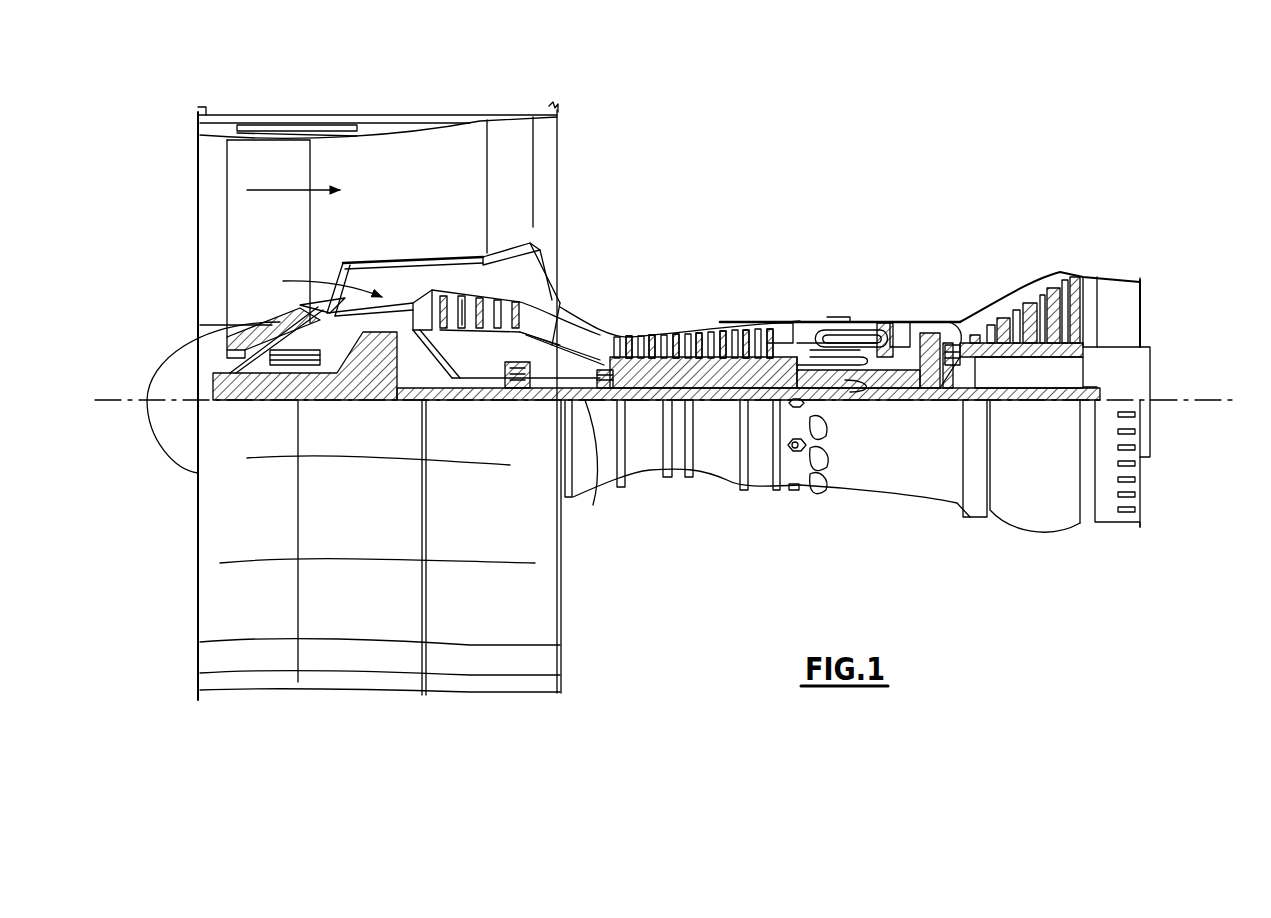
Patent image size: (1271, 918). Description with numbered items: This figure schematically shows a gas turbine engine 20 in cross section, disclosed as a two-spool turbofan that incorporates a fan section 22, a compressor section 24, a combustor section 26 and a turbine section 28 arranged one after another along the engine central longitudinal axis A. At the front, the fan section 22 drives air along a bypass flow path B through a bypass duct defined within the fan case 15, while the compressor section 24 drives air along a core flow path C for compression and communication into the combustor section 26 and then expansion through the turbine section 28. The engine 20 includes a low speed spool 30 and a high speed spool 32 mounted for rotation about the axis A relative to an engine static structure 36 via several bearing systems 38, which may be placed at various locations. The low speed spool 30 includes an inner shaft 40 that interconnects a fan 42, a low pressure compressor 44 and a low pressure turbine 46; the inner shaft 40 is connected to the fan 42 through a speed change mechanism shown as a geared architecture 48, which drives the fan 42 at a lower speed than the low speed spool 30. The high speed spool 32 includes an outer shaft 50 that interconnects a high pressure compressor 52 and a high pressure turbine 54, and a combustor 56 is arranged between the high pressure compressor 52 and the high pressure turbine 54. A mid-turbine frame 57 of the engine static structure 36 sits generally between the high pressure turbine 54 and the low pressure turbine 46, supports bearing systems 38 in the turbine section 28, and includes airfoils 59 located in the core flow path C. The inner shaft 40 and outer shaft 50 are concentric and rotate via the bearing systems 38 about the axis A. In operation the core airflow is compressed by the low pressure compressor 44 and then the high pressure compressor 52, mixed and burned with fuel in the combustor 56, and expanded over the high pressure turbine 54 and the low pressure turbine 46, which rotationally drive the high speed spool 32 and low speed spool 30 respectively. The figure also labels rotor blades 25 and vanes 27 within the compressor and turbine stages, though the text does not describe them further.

The gas turbine engine 20 is at (842, 163).
The fan section 22 is at (311, 106).
The fan case 15 is at (377, 122).
The fan 42 is at (282, 244).
The compressor section 24 is at (608, 302).
The rotor blade 25 is at (444, 318).
The vane 27 is at (462, 300).
The combustor section 26 is at (833, 300).
The turbine section 28 is at (980, 258).
The low speed spool 30 is at (718, 405).
The high speed spool 32 is at (768, 352).
The engine static structure 36 is at (760, 445).
The bearing systems 38 is at (520, 385).
The inner shaft 40 is at (585, 430).
The low pressure compressor 44 is at (496, 306).
The low pressure turbine 46 is at (1025, 305).
The geared architecture 48 is at (385, 376).
The outer shaft 50 is at (848, 392).
The high pressure compressor 52 is at (690, 378).
The high pressure turbine 54 is at (900, 322).
The combustor 56 is at (838, 340).
The mid-turbine frame 57 is at (945, 303).
The airfoils 59 is at (965, 345).
The engine central longitudinal axis A is at (1236, 400).
The bypass flow path B is at (290, 190).
The core flow path C is at (320, 283).